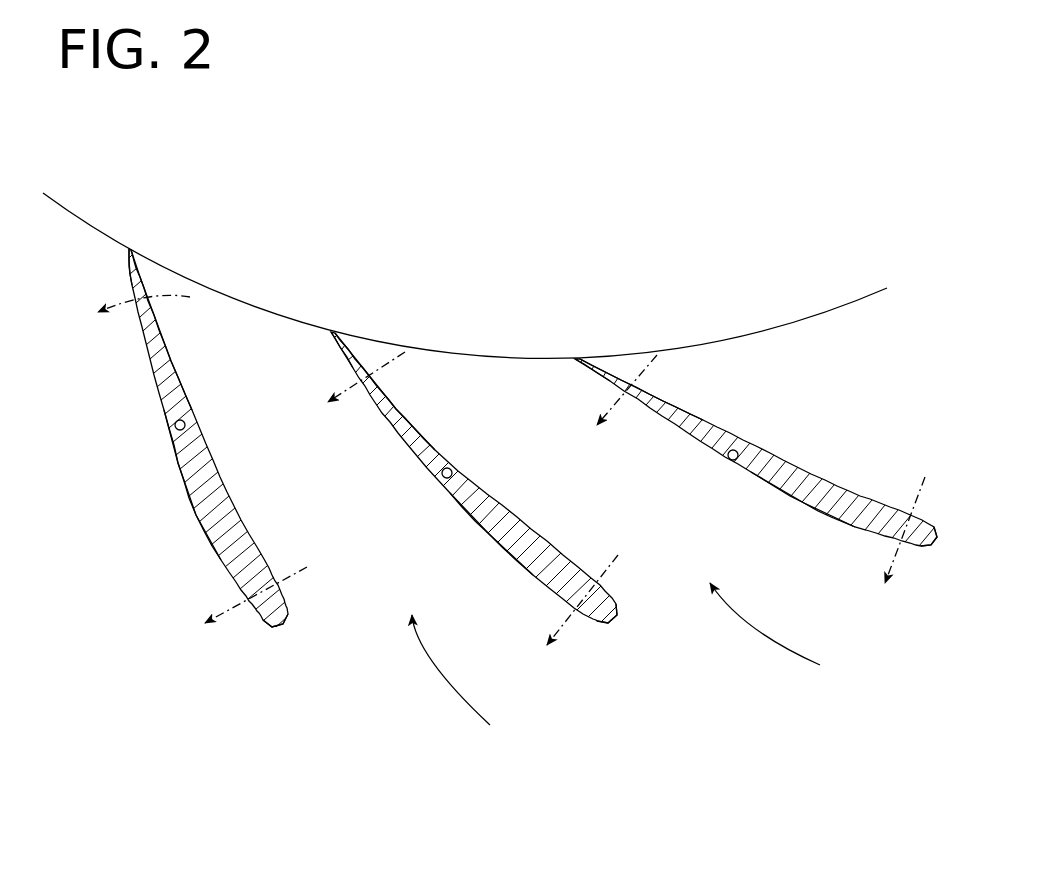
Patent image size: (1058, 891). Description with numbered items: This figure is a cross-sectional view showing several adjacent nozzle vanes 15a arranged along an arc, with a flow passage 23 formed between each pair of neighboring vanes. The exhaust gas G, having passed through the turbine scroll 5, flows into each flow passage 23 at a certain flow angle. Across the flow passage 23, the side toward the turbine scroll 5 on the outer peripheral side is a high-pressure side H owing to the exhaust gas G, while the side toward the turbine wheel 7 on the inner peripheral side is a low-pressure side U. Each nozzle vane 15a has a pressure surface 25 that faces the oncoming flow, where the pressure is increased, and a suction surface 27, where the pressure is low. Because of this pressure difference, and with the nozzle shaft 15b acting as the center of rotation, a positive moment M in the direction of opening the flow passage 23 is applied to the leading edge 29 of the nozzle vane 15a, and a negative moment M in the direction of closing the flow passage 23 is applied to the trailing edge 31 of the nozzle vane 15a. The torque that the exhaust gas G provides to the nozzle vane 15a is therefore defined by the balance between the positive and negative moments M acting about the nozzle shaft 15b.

The turbine scroll 5 is at (522, 816).
The turbine wheel 7 is at (597, 139).
The nozzle vane 15a is at (240, 517).
The nozzle shaft 15b is at (186, 420).
The flow passage 23 is at (258, 328).
The pressure surface 25 is at (172, 372).
The suction surface 27 is at (190, 494).
The leading edge 29 is at (280, 627).
The trailing edge 31 is at (130, 248).
The low-pressure side U is at (297, 359).
The high-pressure side H is at (748, 692).
The exhaust gas G is at (627, 667).
The moment M is at (533, 470).